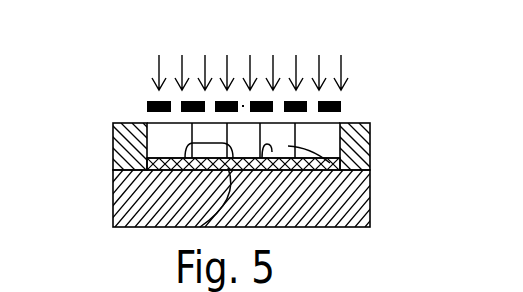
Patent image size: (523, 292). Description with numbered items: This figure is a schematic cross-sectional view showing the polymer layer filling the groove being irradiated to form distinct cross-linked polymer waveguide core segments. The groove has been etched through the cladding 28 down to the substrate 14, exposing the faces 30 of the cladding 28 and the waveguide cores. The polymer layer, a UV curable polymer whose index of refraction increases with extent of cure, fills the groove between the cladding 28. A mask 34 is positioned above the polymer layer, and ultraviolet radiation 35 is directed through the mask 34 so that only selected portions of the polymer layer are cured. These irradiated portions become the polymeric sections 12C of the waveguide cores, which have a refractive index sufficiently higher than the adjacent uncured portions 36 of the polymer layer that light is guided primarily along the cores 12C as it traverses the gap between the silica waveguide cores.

The polymeric sections of the waveguide cores 12C is at (308, 160).
The substrate 14 is at (345, 205).
The cladding 28 is at (113, 145).
The faces 30 is at (160, 142).
The mask 34 is at (340, 107).
The ultraviolet radiation 35 is at (252, 62).
The uncured portions of polymer layer 36 is at (35, 232).